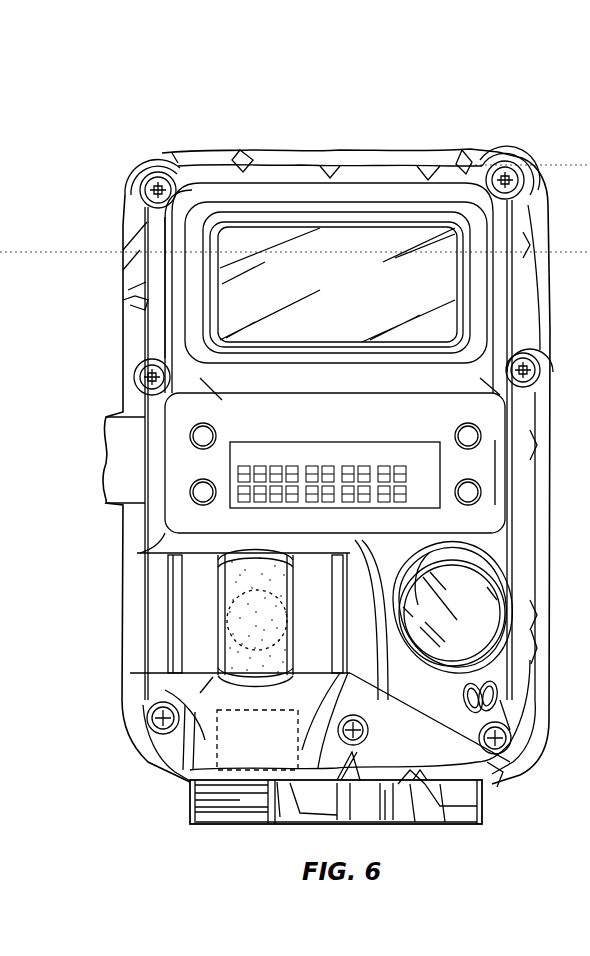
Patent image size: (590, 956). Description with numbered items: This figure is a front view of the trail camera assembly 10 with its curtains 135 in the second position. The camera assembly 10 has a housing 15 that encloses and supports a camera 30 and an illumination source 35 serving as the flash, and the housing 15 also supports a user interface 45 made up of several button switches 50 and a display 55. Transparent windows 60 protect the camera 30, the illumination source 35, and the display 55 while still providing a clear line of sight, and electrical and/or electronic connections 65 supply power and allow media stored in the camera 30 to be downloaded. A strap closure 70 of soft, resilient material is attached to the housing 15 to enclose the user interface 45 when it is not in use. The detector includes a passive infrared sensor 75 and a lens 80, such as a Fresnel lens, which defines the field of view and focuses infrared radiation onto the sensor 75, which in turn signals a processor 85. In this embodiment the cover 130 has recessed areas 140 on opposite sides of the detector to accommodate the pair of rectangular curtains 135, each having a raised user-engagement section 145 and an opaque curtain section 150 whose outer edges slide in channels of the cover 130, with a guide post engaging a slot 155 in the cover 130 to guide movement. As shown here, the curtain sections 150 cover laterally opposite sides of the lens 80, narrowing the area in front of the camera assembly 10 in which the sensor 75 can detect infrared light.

The camera assembly 10 is at (108, 118).
The housing 15 is at (122, 264).
The camera 30 is at (468, 590).
The illumination source 35 is at (345, 238).
The user interface 45 is at (133, 376).
The button switches 50 is at (167, 412).
The display 55 is at (440, 468).
The transparent windows 60 is at (392, 250).
The electrical and/or electronic connections 65 is at (398, 822).
The strap closure 70 is at (114, 452).
The passive infrared sensor 75 is at (180, 738).
The lens 80 is at (207, 568).
The processor 85 is at (160, 790).
The cover 130 is at (150, 530).
The curtains 135 is at (140, 556).
The recessed areas 140 is at (350, 633).
The user-engagement section 145 is at (175, 635).
The curtain section 150 is at (193, 663).
The slot 155 is at (183, 610).